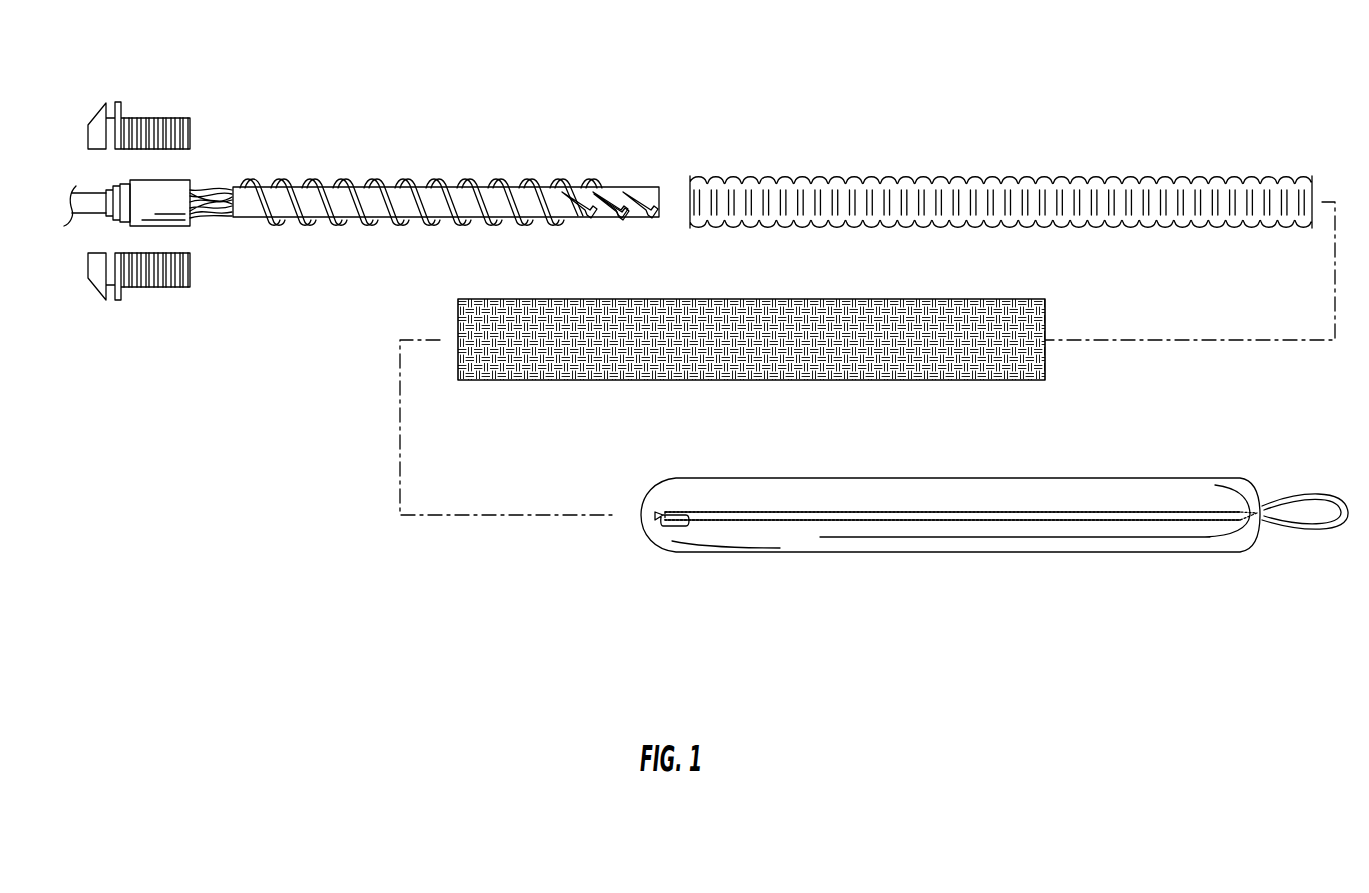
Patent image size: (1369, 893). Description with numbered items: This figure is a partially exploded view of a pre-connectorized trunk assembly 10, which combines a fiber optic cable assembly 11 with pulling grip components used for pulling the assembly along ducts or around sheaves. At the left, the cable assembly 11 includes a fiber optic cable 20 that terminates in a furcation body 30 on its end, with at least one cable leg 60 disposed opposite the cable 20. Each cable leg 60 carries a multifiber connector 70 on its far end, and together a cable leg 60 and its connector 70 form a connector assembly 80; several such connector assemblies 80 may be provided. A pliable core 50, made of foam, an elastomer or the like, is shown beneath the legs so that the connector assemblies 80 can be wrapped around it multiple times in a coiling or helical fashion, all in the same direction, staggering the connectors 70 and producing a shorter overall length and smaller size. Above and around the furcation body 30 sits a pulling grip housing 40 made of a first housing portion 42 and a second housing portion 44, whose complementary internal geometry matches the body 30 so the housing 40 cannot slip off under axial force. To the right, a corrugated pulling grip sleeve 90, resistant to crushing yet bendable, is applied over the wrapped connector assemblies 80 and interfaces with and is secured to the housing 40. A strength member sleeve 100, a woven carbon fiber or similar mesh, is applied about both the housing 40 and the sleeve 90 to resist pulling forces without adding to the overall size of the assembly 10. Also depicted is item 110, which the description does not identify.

The pre-connectorized trunk assembly 10 is at (48, 100).
The fiber optic cable assembly 11 is at (70, 208).
The fiber optic cable 20 is at (90, 197).
The furcation body 30 is at (180, 180).
The pulling grip housing 40 is at (191, 221).
The first housing portion 42 is at (147, 150).
The second housing portion 44 is at (245, 253).
The pliable core 50 is at (273, 205).
The cable leg 60 is at (570, 181).
The multifiber connector 70 is at (587, 132).
The connector assembly 80 is at (459, 151).
The corrugated pulling grip sleeve 90 is at (887, 195).
The strength member sleeve 100 is at (836, 372).
The zippered pouch 110 is at (831, 555).